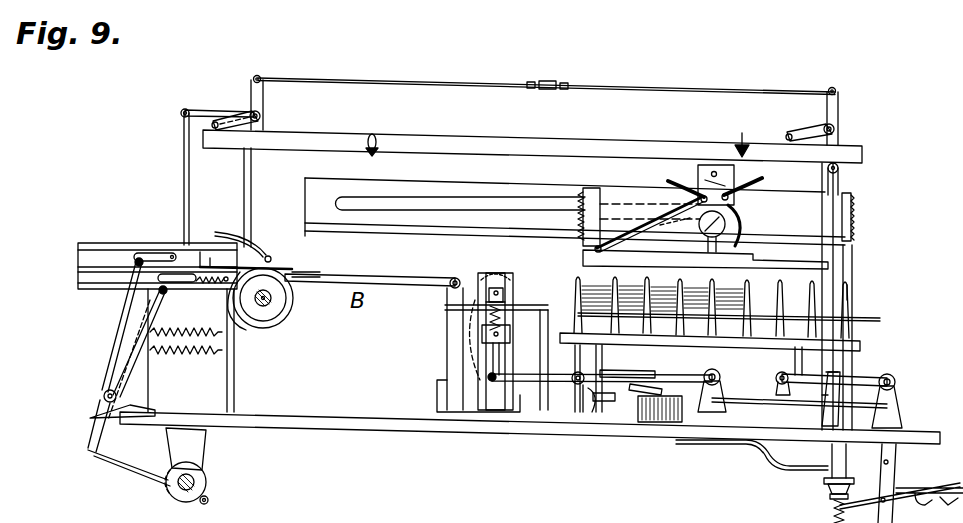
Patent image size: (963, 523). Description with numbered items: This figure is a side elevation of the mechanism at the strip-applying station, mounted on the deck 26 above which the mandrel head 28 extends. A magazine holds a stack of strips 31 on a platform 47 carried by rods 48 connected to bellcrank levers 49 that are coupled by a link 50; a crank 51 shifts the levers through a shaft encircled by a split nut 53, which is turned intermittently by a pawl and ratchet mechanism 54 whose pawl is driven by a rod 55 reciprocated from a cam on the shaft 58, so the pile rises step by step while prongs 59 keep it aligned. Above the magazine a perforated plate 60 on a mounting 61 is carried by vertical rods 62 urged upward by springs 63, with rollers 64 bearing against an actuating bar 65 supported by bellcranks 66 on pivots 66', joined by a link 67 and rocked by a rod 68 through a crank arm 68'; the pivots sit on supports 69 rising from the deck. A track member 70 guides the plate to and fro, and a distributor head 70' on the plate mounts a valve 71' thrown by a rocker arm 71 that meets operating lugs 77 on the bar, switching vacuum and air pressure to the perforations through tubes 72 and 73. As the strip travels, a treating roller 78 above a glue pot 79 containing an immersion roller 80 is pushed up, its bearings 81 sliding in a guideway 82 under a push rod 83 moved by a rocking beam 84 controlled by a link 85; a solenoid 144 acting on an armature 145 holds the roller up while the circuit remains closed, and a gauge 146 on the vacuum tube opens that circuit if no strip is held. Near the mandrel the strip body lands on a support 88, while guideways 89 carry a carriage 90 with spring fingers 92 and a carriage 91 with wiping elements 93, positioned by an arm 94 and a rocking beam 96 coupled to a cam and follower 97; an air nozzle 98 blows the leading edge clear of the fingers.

The deck 26 is at (368, 418).
The mandrel head 28 is at (293, 314).
The strip 31 is at (760, 286).
The platform 47 is at (866, 319).
The rods 48 is at (603, 356).
The bellcrank levers 49 is at (690, 372).
The link 50 is at (740, 408).
The crank 51 is at (832, 412).
The split nut 53 is at (828, 493).
The pawl and ratchet mechanism 54 is at (844, 478).
The rod 55 is at (712, 444).
The shaft 58 is at (196, 486).
The prongs 59 is at (850, 290).
The perforated plate 60 is at (760, 260).
The mounting 61 is at (580, 249).
The rods 62 is at (841, 186).
The springs 63 is at (856, 222).
The rollers 64 is at (840, 170).
The actuating bar 65 is at (600, 146).
The bellcranks 66 is at (544, 111).
The pivots 66' is at (542, 125).
The link 67 is at (478, 82).
The rod 68 is at (161, 179).
The crank arm 68' is at (217, 94).
The supports 69 is at (243, 180).
The track member 70 is at (575, 212).
The distributor head 70' is at (710, 160).
The rocker arm 71 is at (731, 182).
The valve 71' is at (723, 151).
The tube 72 is at (738, 221).
The tube 73 is at (655, 218).
The operating lugs 77 is at (373, 156).
The treating roller 78 is at (505, 291).
The glue pot 79 is at (446, 352).
The immersion roller 80 is at (511, 334).
The bearings 81 is at (480, 304).
The guideway 82 is at (483, 277).
The push rod 83 is at (493, 381).
The rocking beam 84 is at (552, 380).
The link 85 is at (591, 402).
The support 88 is at (377, 277).
The guideways 89 is at (88, 277).
The carriage 90 is at (183, 243).
The carriage 91 is at (197, 286).
The spring fingers 92 is at (290, 266).
The wiping elements 93 is at (238, 326).
The arm 94 is at (124, 318).
The beam 96 is at (118, 358).
The cam and follower 97 is at (200, 470).
The air nozzle 98 is at (269, 254).
The solenoid 144 is at (655, 423).
The armature 145 is at (628, 392).
The gauge 146 is at (706, 241).